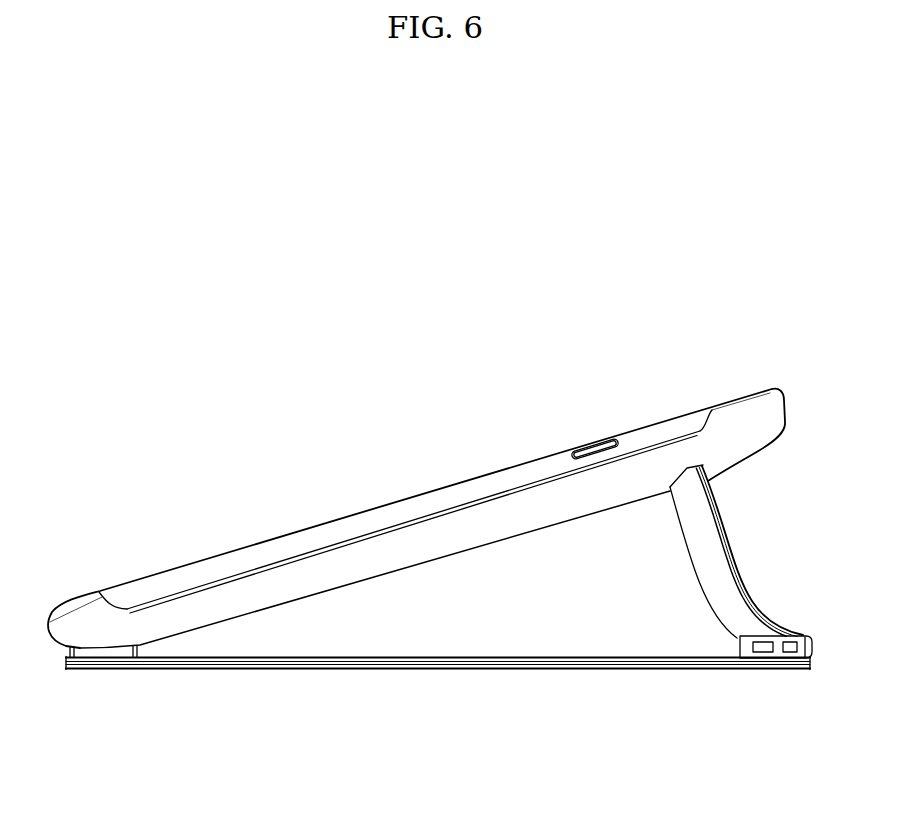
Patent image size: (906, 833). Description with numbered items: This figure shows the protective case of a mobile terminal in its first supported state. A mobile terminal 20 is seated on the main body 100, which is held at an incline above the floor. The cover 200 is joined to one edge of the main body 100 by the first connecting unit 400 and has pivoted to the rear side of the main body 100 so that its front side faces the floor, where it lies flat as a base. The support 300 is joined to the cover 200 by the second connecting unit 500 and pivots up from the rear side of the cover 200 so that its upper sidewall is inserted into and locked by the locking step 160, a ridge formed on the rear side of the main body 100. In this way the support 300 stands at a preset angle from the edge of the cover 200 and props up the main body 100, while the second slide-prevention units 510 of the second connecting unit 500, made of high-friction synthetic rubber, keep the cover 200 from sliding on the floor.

The mobile terminal 20 is at (424, 482).
The main body 100 is at (491, 558).
The locking step 160 is at (672, 489).
The support 300 is at (738, 545).
The first connecting unit 400 is at (88, 652).
The cover 200 is at (413, 670).
The second connecting unit 500 is at (778, 647).
The second slide-prevention units 510 is at (750, 645).